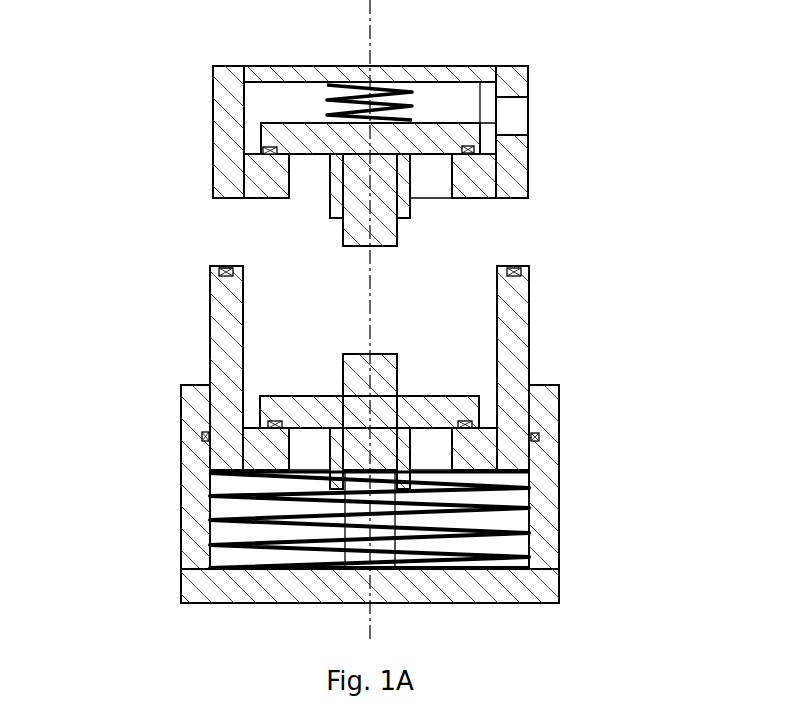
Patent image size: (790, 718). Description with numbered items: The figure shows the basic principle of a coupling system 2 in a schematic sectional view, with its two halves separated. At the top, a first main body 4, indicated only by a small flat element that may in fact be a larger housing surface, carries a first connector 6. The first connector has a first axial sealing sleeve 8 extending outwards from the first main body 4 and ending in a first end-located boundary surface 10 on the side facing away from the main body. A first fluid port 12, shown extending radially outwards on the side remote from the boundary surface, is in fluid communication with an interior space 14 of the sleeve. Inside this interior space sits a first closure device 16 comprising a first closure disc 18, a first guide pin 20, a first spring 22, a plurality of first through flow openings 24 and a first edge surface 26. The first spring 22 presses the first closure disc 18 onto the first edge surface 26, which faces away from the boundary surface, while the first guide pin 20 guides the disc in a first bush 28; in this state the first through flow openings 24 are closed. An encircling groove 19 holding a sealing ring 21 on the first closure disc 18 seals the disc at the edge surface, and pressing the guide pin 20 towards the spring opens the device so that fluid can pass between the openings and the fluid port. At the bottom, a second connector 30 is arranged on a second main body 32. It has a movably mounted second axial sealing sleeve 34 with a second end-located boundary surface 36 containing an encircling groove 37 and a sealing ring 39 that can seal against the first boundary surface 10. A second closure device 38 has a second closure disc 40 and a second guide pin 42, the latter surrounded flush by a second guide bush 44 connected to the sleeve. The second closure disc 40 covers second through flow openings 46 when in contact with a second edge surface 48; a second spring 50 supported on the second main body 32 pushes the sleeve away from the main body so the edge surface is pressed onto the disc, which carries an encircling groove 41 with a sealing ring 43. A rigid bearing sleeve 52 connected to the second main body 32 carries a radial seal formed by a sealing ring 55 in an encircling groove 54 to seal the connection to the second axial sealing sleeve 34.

The coupling system 2 is at (542, 55).
The first main body 4 is at (443, 76).
The first connector 6 is at (205, 60).
The first axial sealing sleeve 8 is at (508, 160).
The first end-located boundary surface 10 is at (210, 212).
The first fluid port 12 is at (508, 108).
The interior space 14 is at (479, 98).
The first closure device 16 is at (270, 96).
The first closure disc 18 is at (289, 126).
The encircling groove 19 is at (488, 148).
The first guide pin 20 is at (384, 237).
The sealing ring 21 is at (255, 157).
The first spring 22 is at (336, 88).
The first through flow openings 24 is at (436, 190).
The first edge surface 26 is at (470, 173).
The first bush 28 is at (335, 218).
The second connector 30 is at (593, 556).
The second main body 32 is at (548, 589).
The second axial sealing sleeve 34 is at (508, 310).
The second end-located boundary surface 36 is at (236, 254).
The encircling groove 37 is at (538, 263).
The second closure device 38 is at (410, 350).
The sealing ring 39 is at (215, 271).
The second closure disc 40 is at (276, 418).
The encircling groove 41 is at (490, 412).
The second guide pin 42 is at (404, 416).
The sealing ring 43 is at (287, 394).
The second guide bush 44 is at (408, 448).
The second through flow openings 46 is at (307, 438).
The second edge surface 48 is at (242, 437).
The second spring 50 is at (505, 520).
The bearing sleeve 52 is at (546, 483).
The encircling groove 54 is at (550, 426).
The sealing ring 55 is at (200, 438).